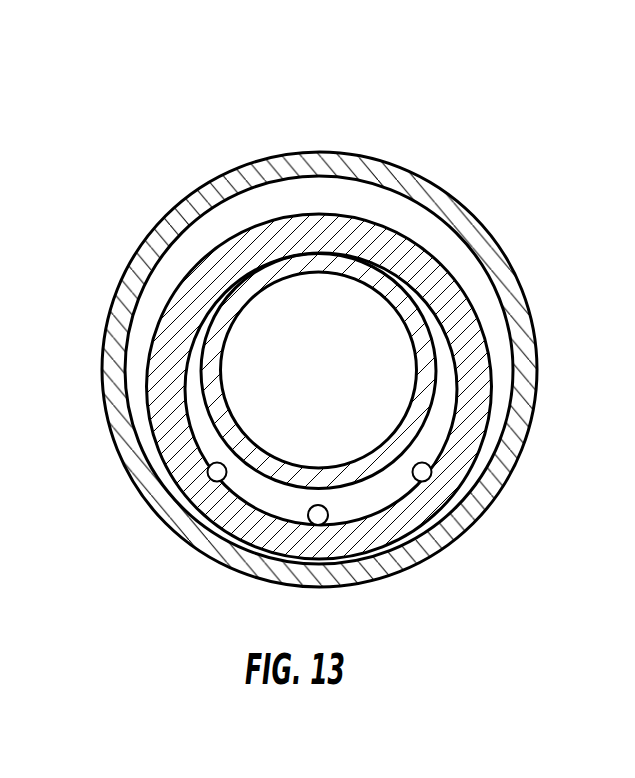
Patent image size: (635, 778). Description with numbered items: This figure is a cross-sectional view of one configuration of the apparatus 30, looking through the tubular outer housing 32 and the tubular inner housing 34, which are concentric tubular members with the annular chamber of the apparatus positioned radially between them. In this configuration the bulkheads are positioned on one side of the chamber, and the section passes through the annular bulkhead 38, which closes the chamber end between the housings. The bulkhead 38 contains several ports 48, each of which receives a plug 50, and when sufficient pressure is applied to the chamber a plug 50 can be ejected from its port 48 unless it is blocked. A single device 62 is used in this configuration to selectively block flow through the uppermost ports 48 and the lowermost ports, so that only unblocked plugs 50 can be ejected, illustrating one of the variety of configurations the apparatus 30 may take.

The apparatus 30 is at (458, 120).
The tubular outer housing 32 is at (152, 230).
The tubular inner housing 34 is at (206, 337).
The annular bulkhead 38 is at (422, 204).
The ports 48 is at (322, 524).
The plugs 50 is at (313, 510).
The device 62 is at (493, 366).